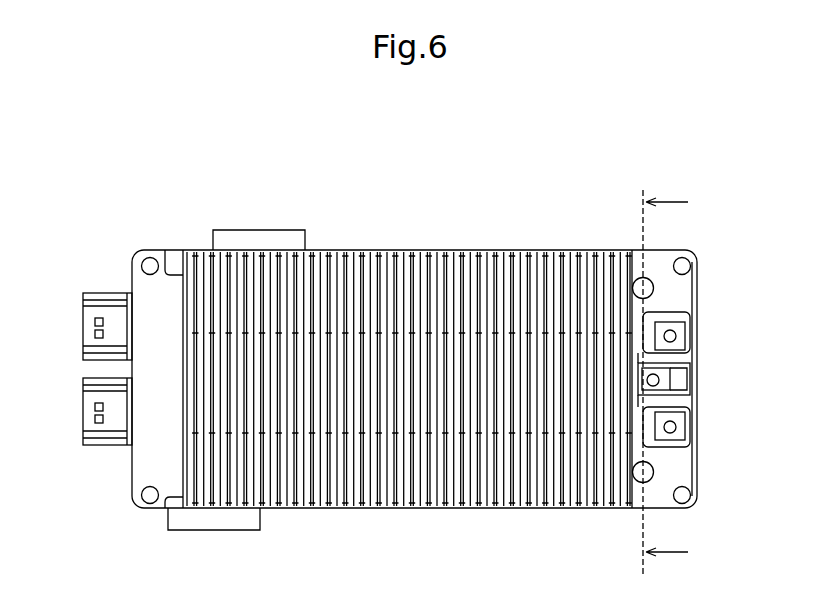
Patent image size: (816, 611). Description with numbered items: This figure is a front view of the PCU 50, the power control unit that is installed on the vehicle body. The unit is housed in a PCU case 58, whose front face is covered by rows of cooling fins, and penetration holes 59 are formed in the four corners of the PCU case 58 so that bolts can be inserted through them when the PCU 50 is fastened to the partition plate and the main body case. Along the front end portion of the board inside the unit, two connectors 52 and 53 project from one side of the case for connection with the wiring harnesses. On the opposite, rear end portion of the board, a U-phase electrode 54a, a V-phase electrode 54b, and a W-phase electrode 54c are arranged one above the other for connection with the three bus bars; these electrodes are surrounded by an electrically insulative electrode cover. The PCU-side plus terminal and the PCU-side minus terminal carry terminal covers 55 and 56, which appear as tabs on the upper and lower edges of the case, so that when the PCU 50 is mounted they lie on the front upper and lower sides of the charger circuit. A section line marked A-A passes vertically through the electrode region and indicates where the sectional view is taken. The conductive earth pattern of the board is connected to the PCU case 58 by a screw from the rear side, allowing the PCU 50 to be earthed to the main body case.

The PCU 50 is at (483, 246).
The connector 52 is at (87, 316).
The connector 53 is at (88, 418).
The U-phase electrode 54a is at (673, 337).
The V-phase electrode 54b is at (656, 381).
The W-phase electrode 54c is at (673, 427).
The terminal cover 55 is at (266, 240).
The terminal cover 56 is at (227, 522).
The PCU case 58 is at (405, 250).
The penetration hole 59 is at (150, 257).